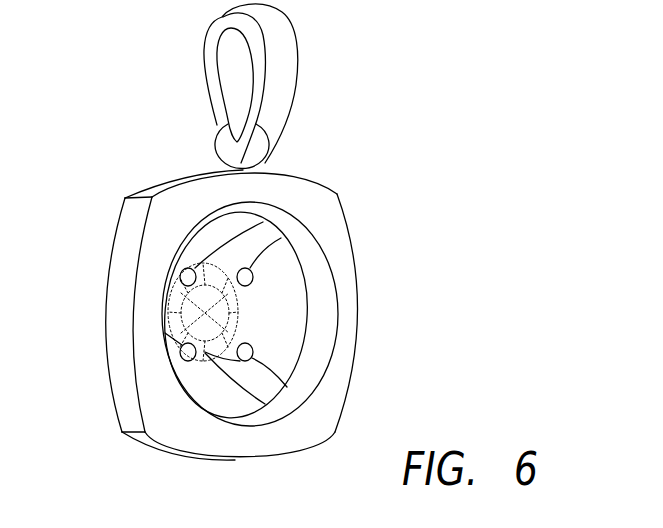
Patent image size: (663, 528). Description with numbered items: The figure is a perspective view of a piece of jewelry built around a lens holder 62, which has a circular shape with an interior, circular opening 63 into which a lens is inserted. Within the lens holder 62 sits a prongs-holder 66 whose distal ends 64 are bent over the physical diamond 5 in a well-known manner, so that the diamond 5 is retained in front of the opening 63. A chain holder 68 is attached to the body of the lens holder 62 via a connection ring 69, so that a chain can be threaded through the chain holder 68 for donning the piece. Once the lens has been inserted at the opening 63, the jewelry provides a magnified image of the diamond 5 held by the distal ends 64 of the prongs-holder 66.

The diamond 5 is at (232, 311).
The lens holder 62 is at (337, 223).
The interior circular opening 63 is at (317, 354).
The distal ends 64 is at (179, 284).
The prongs-holder 66 is at (247, 250).
The chain holder 68 is at (278, 91).
The connection ring 69 is at (218, 147).